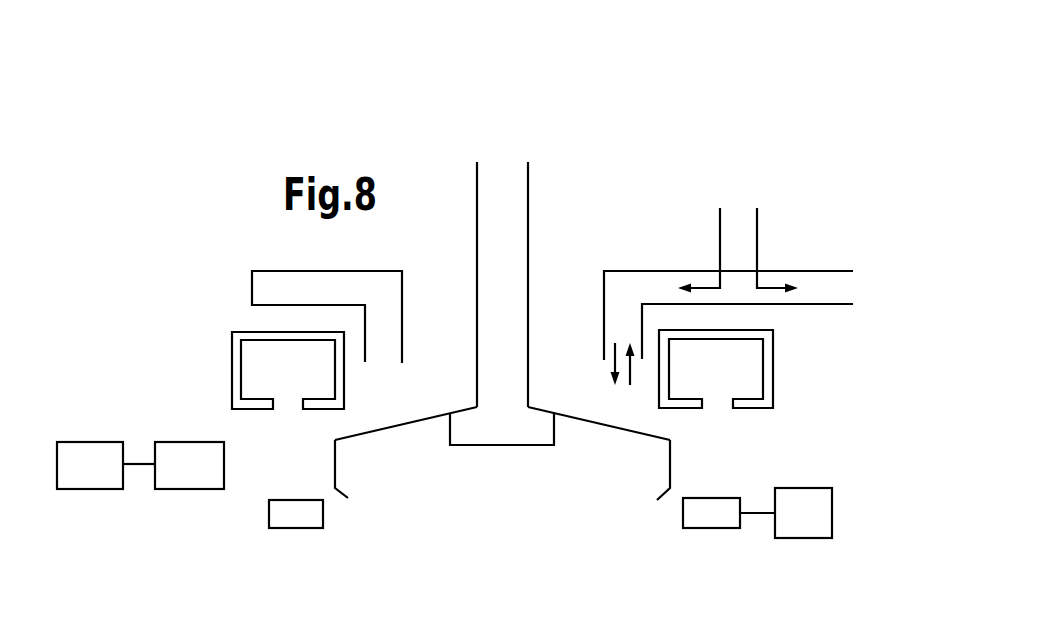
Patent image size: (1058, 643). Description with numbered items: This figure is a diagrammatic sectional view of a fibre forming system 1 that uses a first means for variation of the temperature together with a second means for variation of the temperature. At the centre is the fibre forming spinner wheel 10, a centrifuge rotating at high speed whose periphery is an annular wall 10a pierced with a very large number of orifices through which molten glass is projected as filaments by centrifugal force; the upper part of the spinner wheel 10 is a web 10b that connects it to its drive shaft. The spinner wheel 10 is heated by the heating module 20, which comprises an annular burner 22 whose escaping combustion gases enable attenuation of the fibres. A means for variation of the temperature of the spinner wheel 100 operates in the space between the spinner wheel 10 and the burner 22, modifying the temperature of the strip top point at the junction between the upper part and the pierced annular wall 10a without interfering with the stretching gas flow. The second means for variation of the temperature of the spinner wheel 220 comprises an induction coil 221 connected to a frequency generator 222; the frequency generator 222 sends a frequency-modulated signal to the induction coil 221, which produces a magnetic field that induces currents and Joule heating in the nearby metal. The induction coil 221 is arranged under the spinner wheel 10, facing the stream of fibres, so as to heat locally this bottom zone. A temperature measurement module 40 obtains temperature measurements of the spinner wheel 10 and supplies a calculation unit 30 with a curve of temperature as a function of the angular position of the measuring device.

The fibre forming system 1 is at (559, 393).
The fibre forming spinner wheel 10 is at (559, 426).
The annular wall 10a is at (335, 462).
The web 10b is at (387, 423).
The means for variation of the temperature of the spinner wheel 100 is at (668, 244).
The heating module 20 is at (567, 384).
The annular burner 22 is at (773, 399).
The calculation unit 30 is at (107, 477).
The temperature measurement module 40 is at (207, 477).
The second means for variation of the temperature of the spinner wheel 220 is at (841, 559).
The induction coil 221 is at (305, 528).
The frequency generator 222 is at (832, 503).